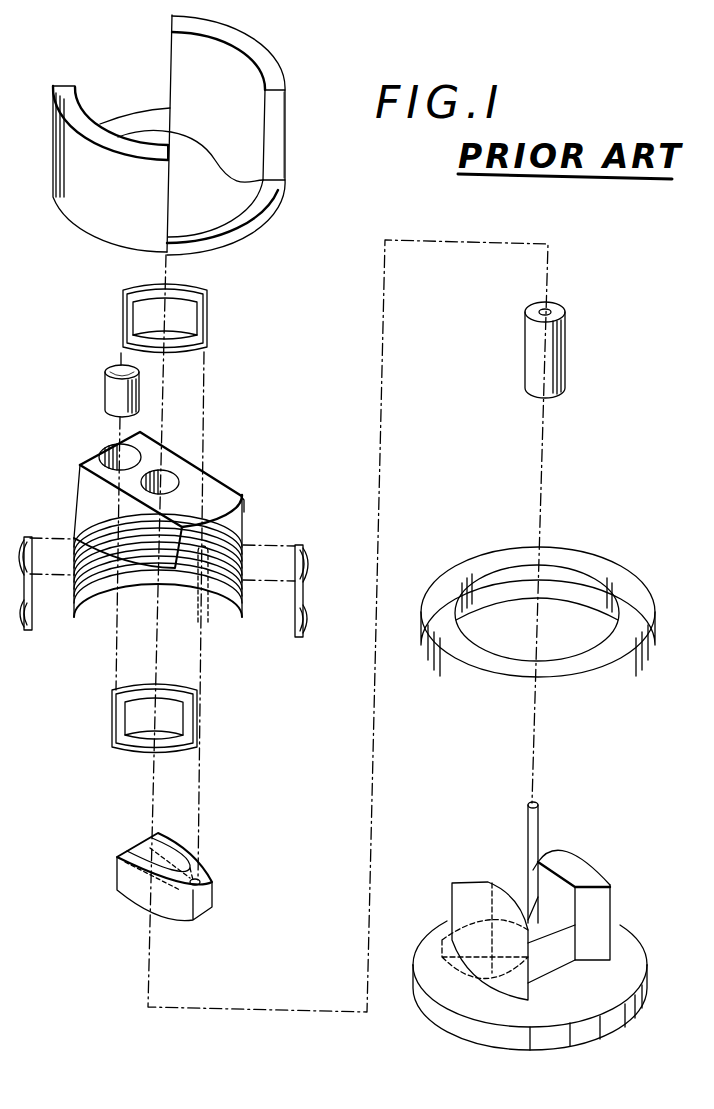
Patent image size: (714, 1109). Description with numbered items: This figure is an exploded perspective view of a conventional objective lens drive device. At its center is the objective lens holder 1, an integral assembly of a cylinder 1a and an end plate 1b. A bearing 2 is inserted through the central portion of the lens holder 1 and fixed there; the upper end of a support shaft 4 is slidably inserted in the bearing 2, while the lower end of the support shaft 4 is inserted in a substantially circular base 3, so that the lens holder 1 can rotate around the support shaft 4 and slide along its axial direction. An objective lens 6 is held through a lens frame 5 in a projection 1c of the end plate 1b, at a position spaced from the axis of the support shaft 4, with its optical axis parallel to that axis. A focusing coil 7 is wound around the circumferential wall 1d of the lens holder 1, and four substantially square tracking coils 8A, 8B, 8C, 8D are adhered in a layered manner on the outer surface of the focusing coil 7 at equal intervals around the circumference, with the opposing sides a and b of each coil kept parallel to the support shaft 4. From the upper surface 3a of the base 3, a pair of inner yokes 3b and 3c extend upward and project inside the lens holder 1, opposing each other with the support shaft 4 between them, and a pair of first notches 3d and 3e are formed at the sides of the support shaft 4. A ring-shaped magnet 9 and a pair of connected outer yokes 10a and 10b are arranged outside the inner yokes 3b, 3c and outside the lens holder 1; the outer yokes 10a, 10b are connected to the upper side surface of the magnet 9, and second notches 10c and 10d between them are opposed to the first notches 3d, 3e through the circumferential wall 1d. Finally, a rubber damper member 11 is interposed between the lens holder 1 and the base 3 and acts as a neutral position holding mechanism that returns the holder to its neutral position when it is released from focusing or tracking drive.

The objective lens holder 1 is at (153, 558).
The cylinder 1a is at (227, 617).
The end plate 1b is at (85, 528).
The projection 1c is at (208, 483).
The circumferential wall 1d is at (207, 622).
The bearing 2 is at (557, 345).
The base 3 is at (544, 911).
The upper surface of the base 3a is at (617, 987).
The inner yoke 3b is at (522, 913).
The inner yoke 3c is at (595, 872).
The first notch 3d is at (595, 933).
The first notch 3e is at (502, 874).
The support shaft 4 is at (537, 820).
The lens frame 5 is at (108, 398).
The objective lens 6 is at (118, 370).
The focusing coil 7 is at (104, 615).
The tracking coil 8A is at (137, 752).
The tracking coil 8B is at (306, 639).
The tracking coil 8C is at (205, 292).
The tracking coil 8D is at (22, 631).
The ring-shaped magnet 9 is at (583, 558).
The outer yoke 10a is at (64, 96).
The outer yoke 10b is at (273, 70).
The second notch 10c is at (287, 178).
The second notch 10d is at (143, 78).
The damper member 11 is at (111, 898).
The side of tracking coil a is at (206, 325).
The side of tracking coil b is at (132, 329).